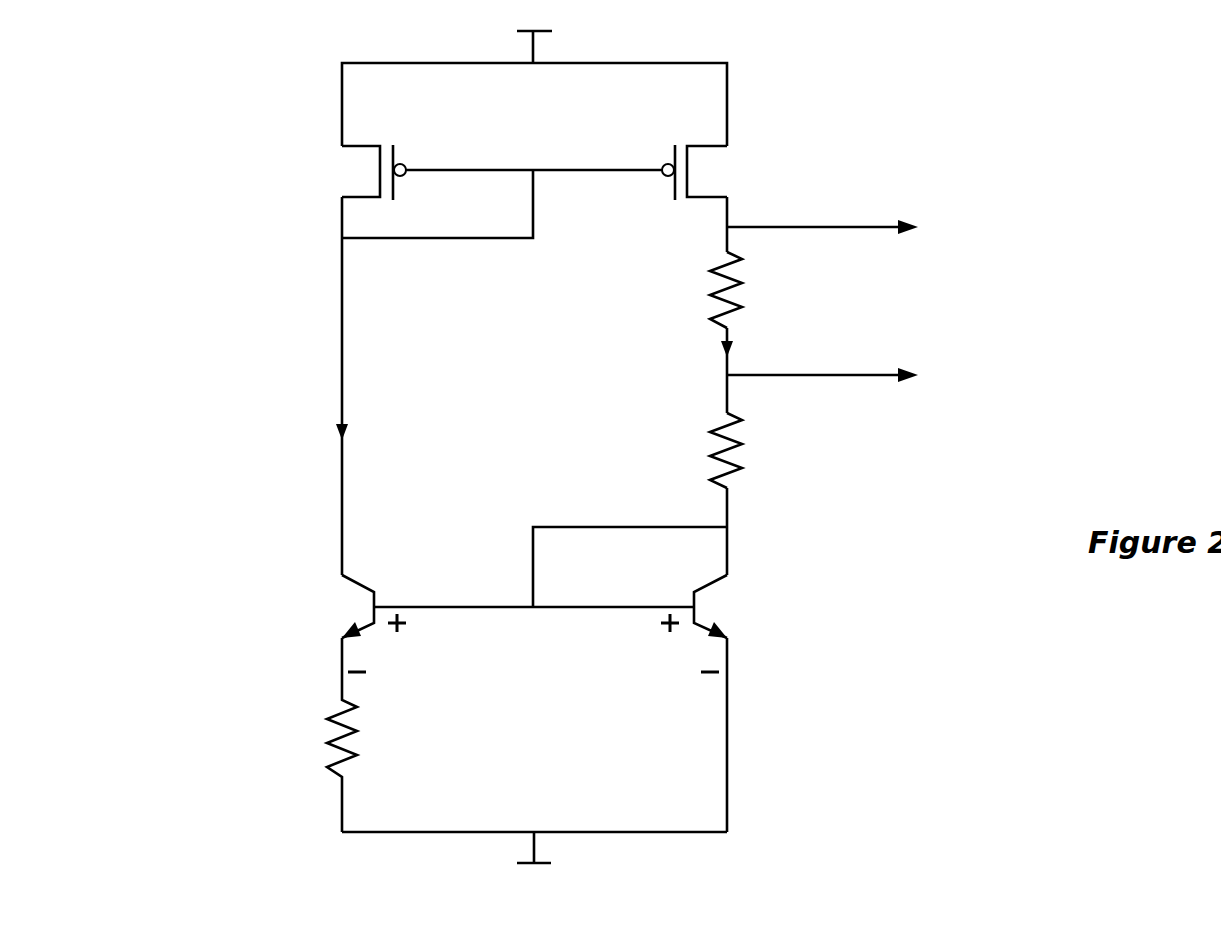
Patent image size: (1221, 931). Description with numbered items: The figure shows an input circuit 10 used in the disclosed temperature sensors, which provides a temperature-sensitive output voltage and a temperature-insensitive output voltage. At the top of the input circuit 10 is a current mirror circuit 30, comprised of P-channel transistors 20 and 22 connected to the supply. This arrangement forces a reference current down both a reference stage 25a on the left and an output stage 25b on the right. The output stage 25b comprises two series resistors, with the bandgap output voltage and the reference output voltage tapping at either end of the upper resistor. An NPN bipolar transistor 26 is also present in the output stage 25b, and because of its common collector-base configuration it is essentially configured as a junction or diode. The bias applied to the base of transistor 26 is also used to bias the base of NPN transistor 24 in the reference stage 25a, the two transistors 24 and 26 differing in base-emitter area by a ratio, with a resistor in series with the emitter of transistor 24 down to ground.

The input circuit 10 is at (873, 720).
The P-channel transistor 20 is at (343, 173).
The P-channel transistor 22 is at (725, 173).
The NPN transistor 24 is at (340, 607).
The NPN transistor 26 is at (725, 607).
The current mirror circuit 30 is at (240, 63).
The reference stage 25a is at (424, 838).
The output stage 25b is at (767, 838).